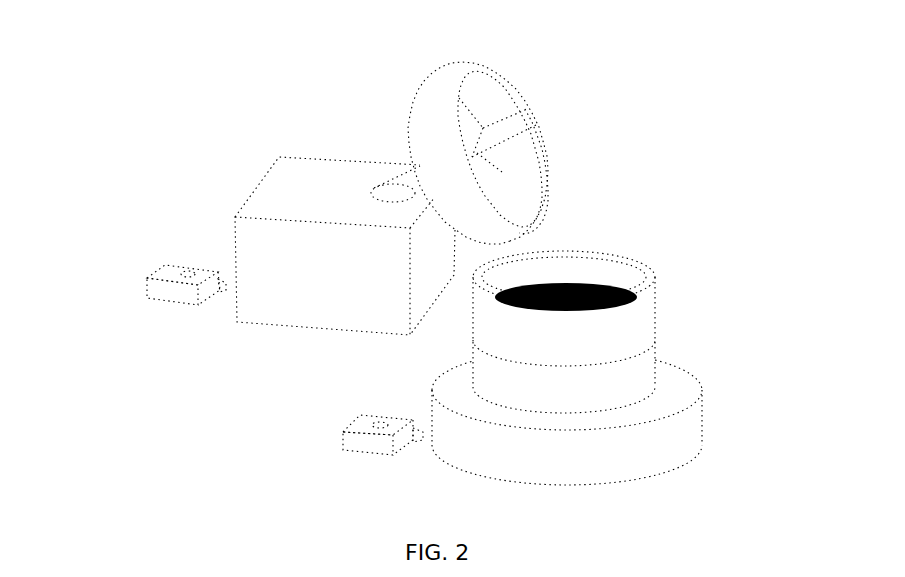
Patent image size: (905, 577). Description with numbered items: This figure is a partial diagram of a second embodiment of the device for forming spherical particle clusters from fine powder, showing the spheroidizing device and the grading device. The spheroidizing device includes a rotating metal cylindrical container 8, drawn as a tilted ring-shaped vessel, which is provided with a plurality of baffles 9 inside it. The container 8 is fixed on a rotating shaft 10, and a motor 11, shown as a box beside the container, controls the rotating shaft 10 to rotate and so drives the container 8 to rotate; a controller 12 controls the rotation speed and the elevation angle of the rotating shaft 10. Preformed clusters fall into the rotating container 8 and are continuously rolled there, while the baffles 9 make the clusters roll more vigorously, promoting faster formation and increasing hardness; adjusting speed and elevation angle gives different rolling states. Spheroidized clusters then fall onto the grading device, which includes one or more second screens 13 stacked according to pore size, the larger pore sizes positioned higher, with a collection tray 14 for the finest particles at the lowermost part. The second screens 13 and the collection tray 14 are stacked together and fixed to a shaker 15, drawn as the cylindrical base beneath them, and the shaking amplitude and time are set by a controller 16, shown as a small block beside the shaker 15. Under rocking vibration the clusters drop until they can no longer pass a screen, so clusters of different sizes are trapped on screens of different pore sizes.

The rotating metal cylindrical container 8 is at (500, 95).
The baffle 9 is at (497, 142).
The rotating shaft 10 is at (410, 195).
The motor 11 is at (332, 253).
The controller 12 is at (198, 283).
The second screen 13 is at (605, 283).
The collection tray 14 is at (608, 382).
The shaker 15 is at (608, 442).
The controller 16 is at (388, 450).